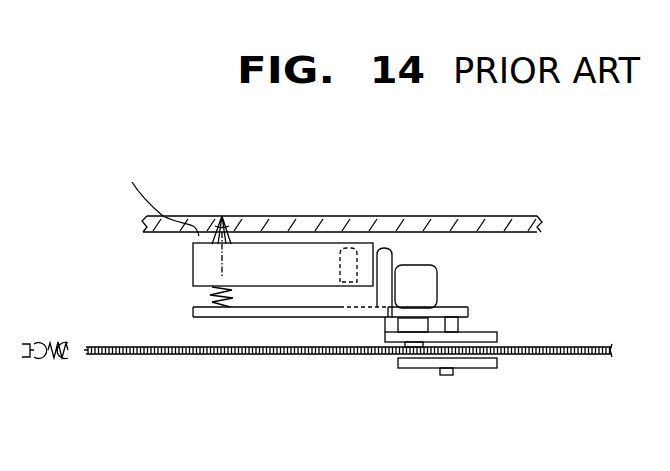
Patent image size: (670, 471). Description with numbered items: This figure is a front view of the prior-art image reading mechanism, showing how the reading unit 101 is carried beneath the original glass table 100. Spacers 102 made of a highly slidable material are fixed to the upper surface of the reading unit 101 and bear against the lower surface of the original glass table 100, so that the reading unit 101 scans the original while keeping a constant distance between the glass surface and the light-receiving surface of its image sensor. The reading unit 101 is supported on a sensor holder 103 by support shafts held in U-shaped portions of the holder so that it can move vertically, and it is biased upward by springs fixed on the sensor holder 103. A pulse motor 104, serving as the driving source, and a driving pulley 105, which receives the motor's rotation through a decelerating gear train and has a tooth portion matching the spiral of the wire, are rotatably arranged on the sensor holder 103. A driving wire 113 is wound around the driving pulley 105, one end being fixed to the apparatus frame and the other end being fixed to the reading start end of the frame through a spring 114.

The original glass table 100 is at (265, 224).
The reading unit 101 is at (258, 258).
The spacers 102 is at (151, 193).
The sensor holder 103 is at (192, 313).
The pulse motor 104 is at (430, 278).
The driving pulley 105 is at (468, 308).
The driving wire 113 is at (555, 347).
The spring 114 is at (57, 358).